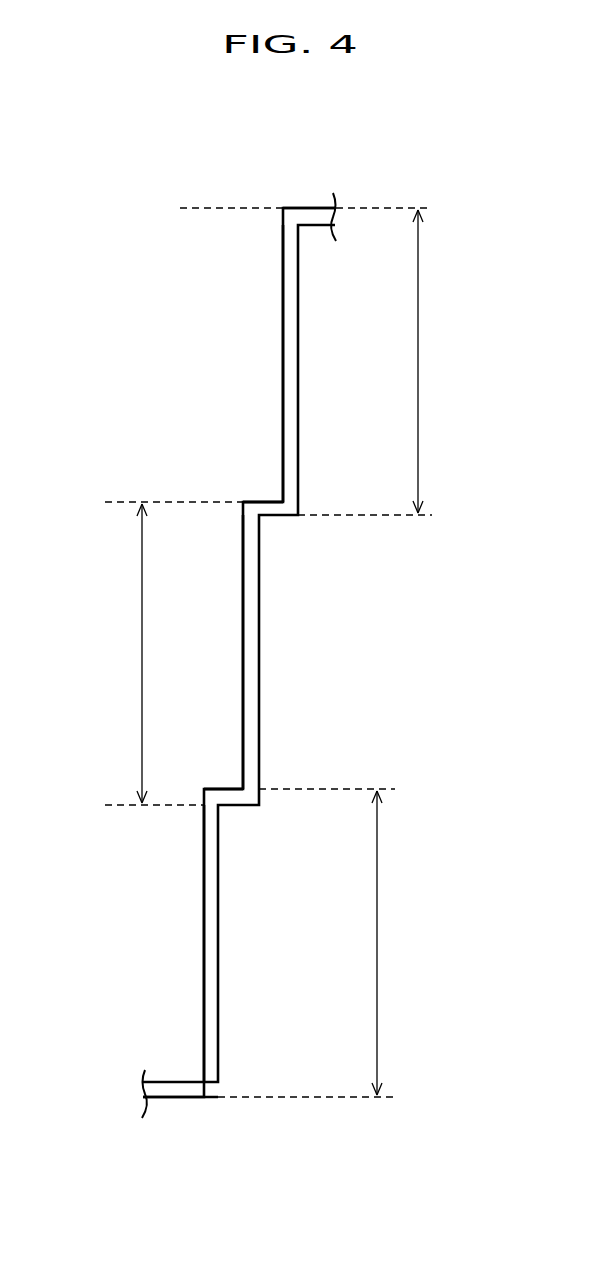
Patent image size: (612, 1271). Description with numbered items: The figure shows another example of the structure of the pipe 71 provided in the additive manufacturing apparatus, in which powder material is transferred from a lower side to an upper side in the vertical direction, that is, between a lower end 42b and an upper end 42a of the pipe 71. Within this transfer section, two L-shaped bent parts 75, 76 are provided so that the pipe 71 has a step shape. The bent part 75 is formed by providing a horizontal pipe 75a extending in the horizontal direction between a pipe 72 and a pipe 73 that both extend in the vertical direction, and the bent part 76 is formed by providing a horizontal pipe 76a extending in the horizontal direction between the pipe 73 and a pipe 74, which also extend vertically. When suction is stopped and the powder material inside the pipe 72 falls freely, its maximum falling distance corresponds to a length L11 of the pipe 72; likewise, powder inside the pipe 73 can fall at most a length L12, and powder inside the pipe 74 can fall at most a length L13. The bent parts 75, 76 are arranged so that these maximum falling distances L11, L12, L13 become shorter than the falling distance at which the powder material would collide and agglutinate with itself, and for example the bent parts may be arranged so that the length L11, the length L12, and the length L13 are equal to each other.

The pipe 71 is at (360, 183).
The upper end 42a is at (300, 208).
The lower end 42b is at (200, 1100).
The pipe 72 is at (298, 365).
The pipe 73 is at (260, 648).
The pipe 74 is at (220, 928).
The bent part 75 is at (293, 540).
The horizontal pipe 75a is at (263, 502).
The bent part 76 is at (245, 823).
The horizontal pipe 76a is at (218, 788).
The length L11 is at (443, 361).
The length L12 is at (117, 653).
The length L13 is at (404, 943).